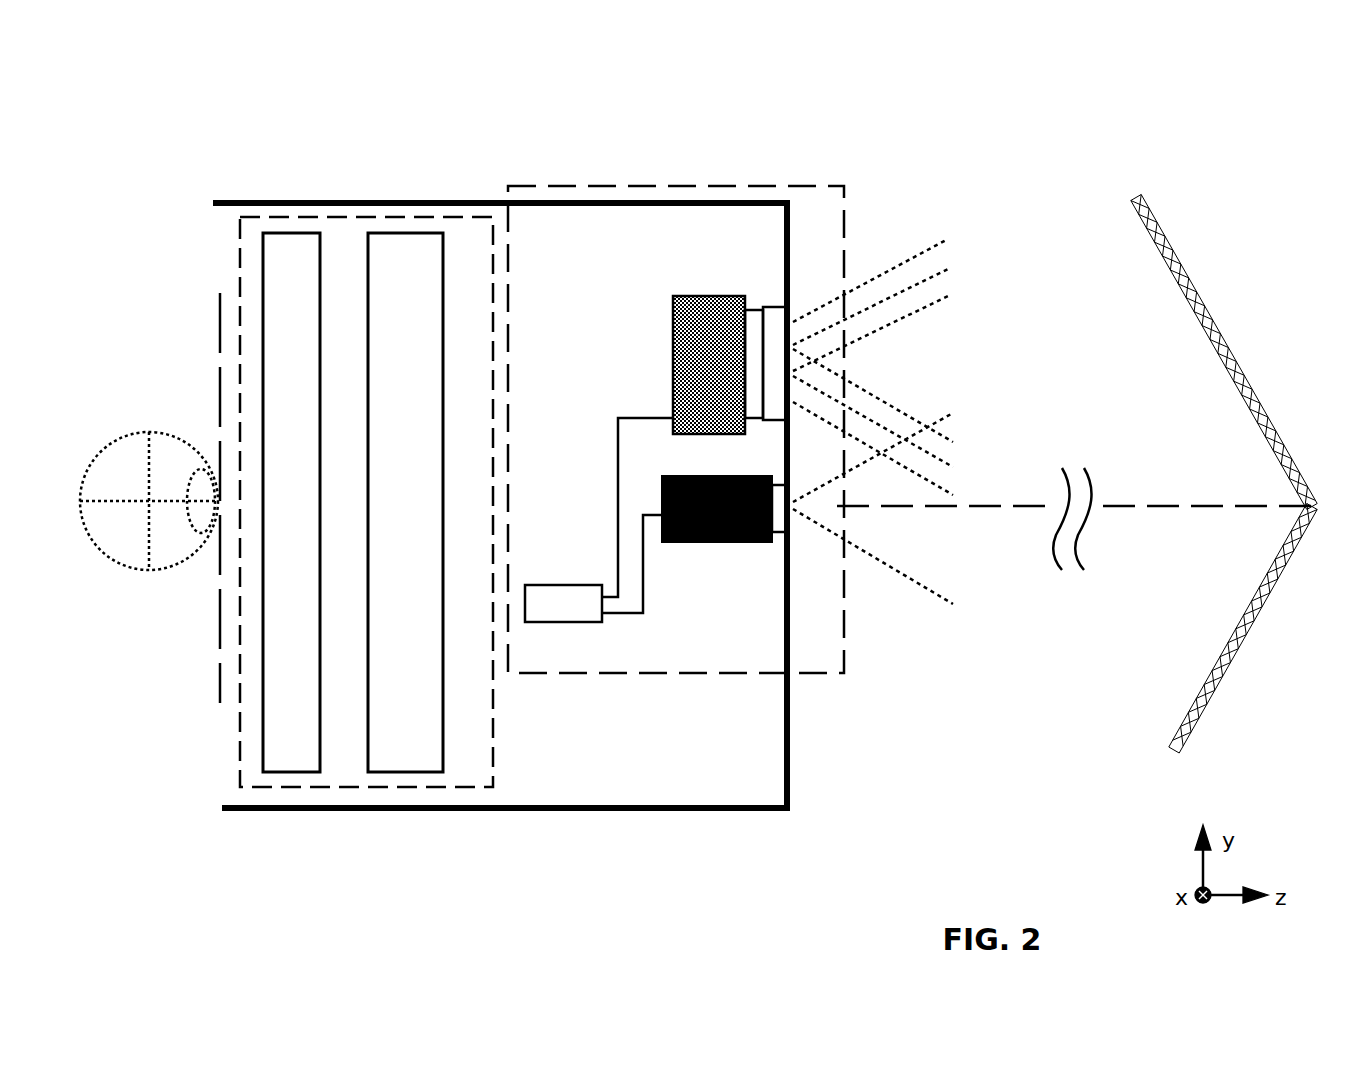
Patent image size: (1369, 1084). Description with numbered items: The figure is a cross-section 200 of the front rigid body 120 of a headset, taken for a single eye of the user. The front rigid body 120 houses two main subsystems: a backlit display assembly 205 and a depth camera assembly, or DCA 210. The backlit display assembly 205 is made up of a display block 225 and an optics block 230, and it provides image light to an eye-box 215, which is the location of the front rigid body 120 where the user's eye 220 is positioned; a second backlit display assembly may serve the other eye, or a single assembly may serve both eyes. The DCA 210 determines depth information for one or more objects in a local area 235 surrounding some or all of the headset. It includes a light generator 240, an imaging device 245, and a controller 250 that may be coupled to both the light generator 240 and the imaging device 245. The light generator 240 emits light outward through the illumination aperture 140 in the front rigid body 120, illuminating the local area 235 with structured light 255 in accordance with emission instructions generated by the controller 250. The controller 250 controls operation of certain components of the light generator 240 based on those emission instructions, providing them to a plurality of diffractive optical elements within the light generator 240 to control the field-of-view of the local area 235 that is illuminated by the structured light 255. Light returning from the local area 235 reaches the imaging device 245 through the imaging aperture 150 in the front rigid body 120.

The cross-section 200 is at (120, 79).
The front rigid body 120 is at (750, 813).
The illumination aperture 140 is at (781, 307).
The imaging aperture 150 is at (788, 533).
The backlit display assembly 205 is at (388, 217).
The DCA 210 is at (575, 186).
The eye-box 215 is at (219, 345).
The eye 220 is at (149, 570).
The display block 225 is at (390, 757).
The optics block 230 is at (287, 757).
The local area 235 is at (1077, 474).
The light generator 240 is at (708, 296).
The imaging device 245 is at (693, 542).
The controller 250 is at (565, 612).
The structured light 255 is at (905, 285).